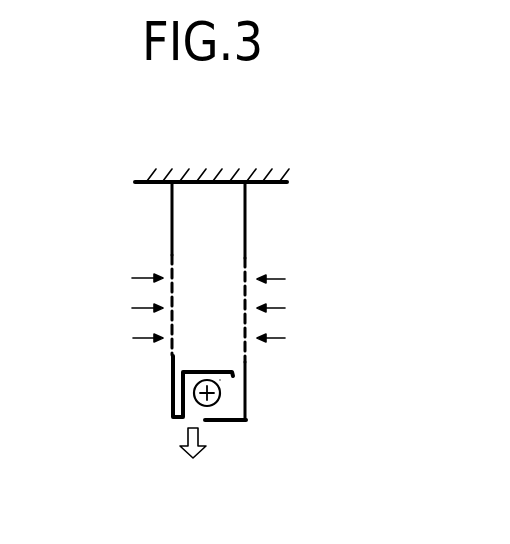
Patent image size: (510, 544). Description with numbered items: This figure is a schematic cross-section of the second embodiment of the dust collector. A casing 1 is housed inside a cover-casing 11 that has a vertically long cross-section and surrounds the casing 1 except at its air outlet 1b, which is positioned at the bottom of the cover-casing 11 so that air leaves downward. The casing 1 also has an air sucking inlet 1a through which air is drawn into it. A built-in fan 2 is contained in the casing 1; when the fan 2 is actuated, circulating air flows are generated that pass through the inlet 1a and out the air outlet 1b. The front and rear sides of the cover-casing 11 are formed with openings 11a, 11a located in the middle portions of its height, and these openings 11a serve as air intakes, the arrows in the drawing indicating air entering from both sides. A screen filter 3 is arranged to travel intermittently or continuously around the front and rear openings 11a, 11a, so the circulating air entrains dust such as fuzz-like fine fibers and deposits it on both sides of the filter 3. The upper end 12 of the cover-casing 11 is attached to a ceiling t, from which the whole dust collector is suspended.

The ceiling t is at (216, 181).
The upper end 12 is at (248, 213).
The openings 11a is at (182, 300).
The screen filter 3 is at (248, 297).
The cover-casing 11 is at (247, 392).
The casing 1 is at (203, 368).
The air sucking inlet 1a is at (233, 388).
The built-in fan 2 is at (217, 405).
The air outlet 1b is at (192, 418).